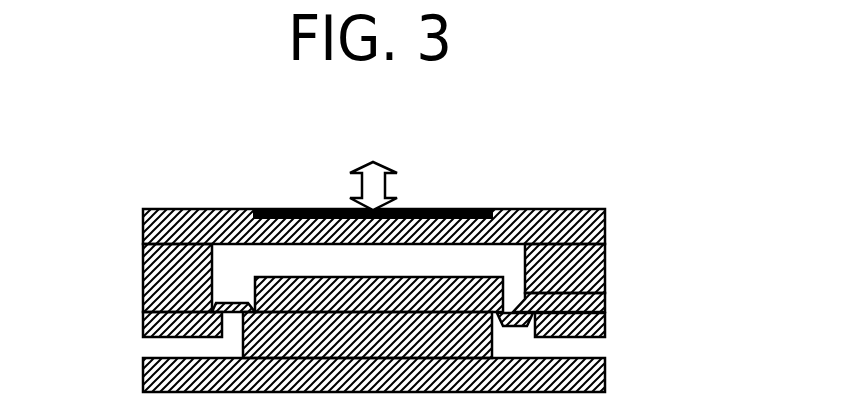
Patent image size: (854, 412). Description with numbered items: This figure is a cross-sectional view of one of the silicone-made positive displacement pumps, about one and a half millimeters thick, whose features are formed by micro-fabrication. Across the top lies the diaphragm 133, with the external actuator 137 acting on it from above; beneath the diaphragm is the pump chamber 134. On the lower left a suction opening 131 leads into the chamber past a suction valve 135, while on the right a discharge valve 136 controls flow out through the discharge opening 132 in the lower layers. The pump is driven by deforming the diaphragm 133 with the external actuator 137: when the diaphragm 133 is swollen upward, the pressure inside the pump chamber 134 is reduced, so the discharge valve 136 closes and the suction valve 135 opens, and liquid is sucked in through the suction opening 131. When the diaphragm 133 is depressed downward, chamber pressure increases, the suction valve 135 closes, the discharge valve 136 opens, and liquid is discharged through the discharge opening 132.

The suction opening 131 is at (163, 345).
The discharge opening 132 is at (572, 350).
The diaphragm 133 is at (575, 230).
The pump chamber 134 is at (243, 263).
The suction valve 135 is at (226, 302).
The discharge valve 136 is at (605, 293).
The external actuator 137 is at (443, 210).